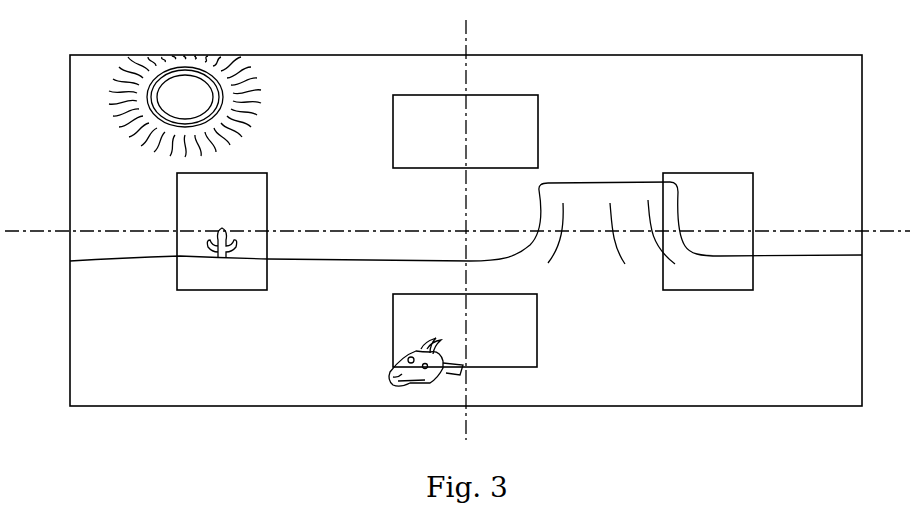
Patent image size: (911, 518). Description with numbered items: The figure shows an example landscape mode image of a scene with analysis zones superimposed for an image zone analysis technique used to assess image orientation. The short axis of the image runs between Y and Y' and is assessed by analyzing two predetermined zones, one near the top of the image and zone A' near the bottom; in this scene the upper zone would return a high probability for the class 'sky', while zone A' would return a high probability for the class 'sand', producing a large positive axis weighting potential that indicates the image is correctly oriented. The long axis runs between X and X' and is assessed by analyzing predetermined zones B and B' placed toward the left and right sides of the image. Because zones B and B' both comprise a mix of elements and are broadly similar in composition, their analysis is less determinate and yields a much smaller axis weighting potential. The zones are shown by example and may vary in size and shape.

The sampling zone B is at (708, 231).
The sampling zone B' is at (222, 231).
The sampling zone A' is at (463, 340).
The long axis end X is at (892, 220).
The long axis end X' is at (457, 221).
The short axis end Y is at (473, 230).
The short axis end Y' is at (476, 422).